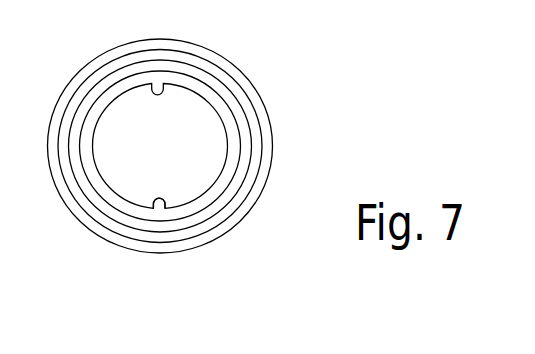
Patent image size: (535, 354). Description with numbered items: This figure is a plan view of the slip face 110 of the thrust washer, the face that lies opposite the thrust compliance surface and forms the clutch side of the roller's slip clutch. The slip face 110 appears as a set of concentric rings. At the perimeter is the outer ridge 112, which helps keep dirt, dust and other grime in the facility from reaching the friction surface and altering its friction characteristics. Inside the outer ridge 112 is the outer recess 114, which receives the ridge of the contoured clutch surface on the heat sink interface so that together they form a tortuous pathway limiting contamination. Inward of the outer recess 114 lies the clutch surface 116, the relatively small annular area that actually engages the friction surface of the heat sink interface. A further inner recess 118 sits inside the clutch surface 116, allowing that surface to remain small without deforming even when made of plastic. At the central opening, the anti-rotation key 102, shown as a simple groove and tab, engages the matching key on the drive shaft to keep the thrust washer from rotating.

The anti-rotation key 102 is at (158, 201).
The slip face 110 is at (215, 88).
The outer ridge 112 is at (260, 127).
The outer recess 114 is at (242, 192).
The clutch surface 116 is at (218, 207).
The inner recess 118 is at (185, 212).